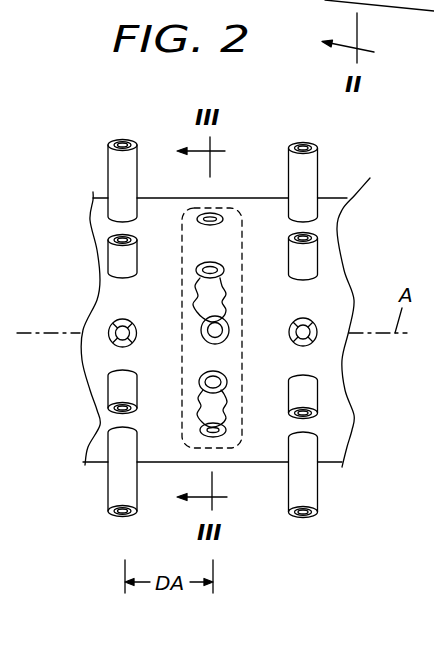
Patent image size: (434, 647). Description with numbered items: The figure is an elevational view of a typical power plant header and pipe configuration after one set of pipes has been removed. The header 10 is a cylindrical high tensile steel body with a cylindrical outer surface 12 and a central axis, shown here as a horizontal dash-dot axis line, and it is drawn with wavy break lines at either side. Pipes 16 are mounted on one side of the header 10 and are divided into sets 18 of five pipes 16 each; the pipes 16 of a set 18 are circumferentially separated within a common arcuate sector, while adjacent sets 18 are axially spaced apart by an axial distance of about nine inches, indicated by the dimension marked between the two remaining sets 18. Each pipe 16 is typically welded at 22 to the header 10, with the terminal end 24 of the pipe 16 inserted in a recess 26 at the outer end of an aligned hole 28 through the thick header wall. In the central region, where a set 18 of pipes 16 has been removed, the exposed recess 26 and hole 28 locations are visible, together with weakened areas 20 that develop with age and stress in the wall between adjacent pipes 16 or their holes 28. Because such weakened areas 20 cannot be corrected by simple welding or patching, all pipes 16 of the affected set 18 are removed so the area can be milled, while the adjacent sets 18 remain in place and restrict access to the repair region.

The header 10 is at (88, 156).
The cylindrical outer surface 12 is at (105, 284).
The pipes 16 is at (115, 490).
The sets of pipes 18 is at (124, 126).
The weakened areas 20 is at (225, 303).
The weld 22 is at (310, 453).
The terminal end 24 is at (115, 260).
The recess 26 is at (200, 214).
The hole 28 is at (215, 211).